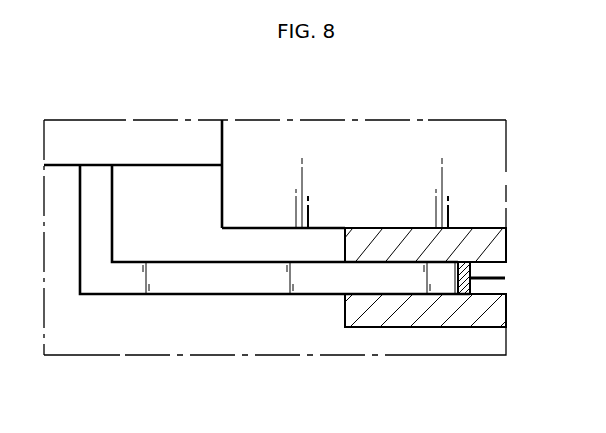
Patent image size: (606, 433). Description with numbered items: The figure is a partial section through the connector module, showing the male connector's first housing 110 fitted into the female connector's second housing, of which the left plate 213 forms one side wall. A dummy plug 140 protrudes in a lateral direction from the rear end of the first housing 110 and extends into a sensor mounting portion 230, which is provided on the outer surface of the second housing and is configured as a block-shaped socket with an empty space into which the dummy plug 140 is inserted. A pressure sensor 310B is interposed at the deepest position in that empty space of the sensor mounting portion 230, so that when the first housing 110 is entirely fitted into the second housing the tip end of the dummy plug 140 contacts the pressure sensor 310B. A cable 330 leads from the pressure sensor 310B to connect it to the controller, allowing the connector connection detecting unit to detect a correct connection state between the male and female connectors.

The first housing 110 is at (98, 140).
The left plate 213 is at (485, 160).
The dummy plug 140 is at (236, 280).
The sensor mounting portion 230 is at (447, 320).
The pressure sensor 310B is at (468, 271).
The cable 330 is at (500, 281).